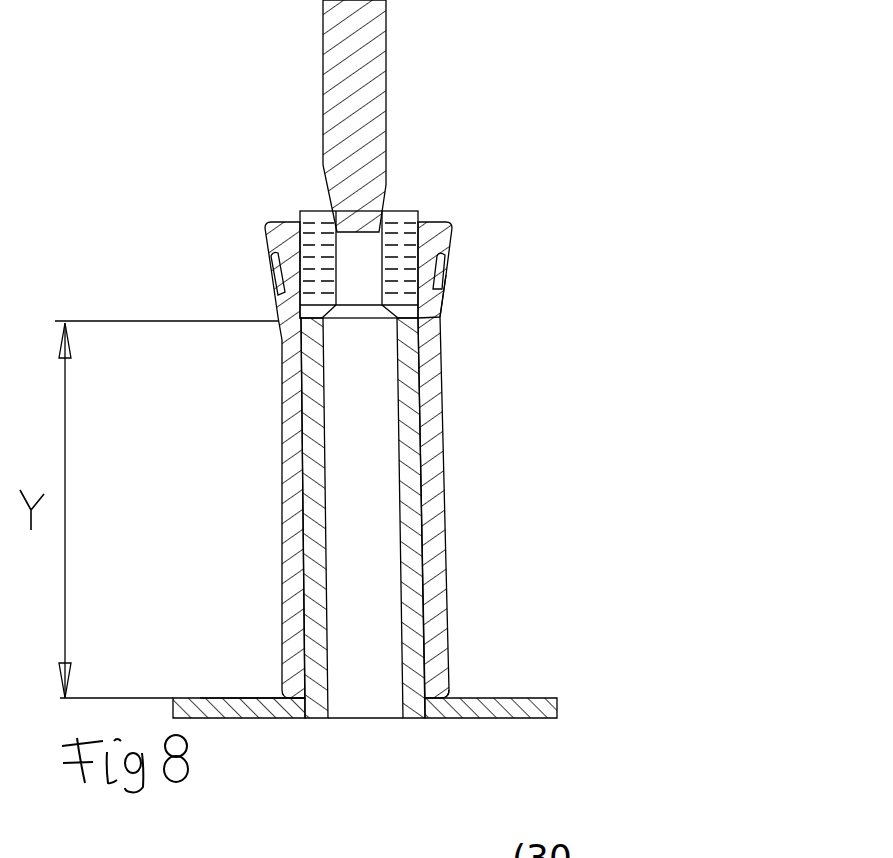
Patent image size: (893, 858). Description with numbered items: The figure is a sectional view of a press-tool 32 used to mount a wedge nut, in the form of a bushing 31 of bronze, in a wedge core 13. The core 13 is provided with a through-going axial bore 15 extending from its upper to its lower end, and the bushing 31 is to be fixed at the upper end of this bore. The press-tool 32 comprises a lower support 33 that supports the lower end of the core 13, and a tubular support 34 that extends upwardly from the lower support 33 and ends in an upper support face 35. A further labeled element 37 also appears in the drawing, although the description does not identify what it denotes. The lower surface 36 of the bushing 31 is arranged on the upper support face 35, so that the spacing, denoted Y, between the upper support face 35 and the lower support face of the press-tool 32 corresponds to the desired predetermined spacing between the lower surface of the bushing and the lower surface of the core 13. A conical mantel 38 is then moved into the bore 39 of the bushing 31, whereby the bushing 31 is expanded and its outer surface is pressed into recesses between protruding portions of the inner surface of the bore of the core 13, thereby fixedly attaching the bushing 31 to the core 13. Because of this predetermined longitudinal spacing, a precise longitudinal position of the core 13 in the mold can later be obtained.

The conical mantel 38 is at (386, 60).
The bushing 31 is at (417, 212).
The bore 39 is at (379, 249).
The core 13 is at (432, 468).
The through-going axial bore 15 is at (298, 258).
The upper support face 35 is at (420, 297).
The tubular support 34 is at (422, 538).
The lower surface of the bushing 36 is at (468, 693).
The lower support 33 is at (505, 698).
The upper surface 37 is at (250, 698).
The press-tool 32 is at (225, 678).